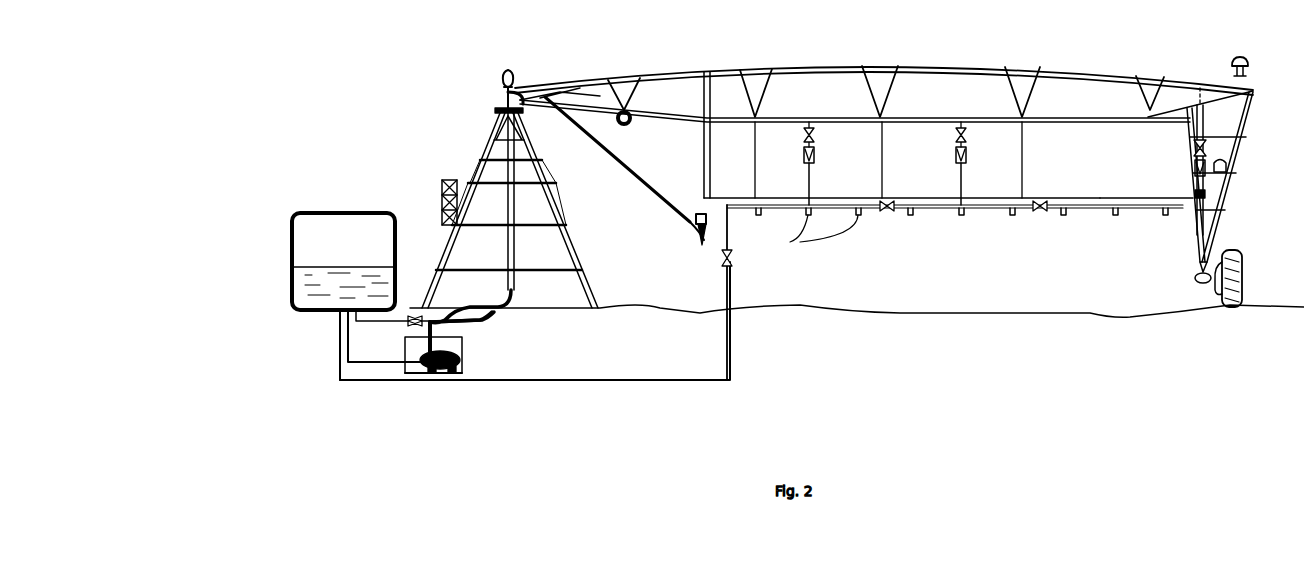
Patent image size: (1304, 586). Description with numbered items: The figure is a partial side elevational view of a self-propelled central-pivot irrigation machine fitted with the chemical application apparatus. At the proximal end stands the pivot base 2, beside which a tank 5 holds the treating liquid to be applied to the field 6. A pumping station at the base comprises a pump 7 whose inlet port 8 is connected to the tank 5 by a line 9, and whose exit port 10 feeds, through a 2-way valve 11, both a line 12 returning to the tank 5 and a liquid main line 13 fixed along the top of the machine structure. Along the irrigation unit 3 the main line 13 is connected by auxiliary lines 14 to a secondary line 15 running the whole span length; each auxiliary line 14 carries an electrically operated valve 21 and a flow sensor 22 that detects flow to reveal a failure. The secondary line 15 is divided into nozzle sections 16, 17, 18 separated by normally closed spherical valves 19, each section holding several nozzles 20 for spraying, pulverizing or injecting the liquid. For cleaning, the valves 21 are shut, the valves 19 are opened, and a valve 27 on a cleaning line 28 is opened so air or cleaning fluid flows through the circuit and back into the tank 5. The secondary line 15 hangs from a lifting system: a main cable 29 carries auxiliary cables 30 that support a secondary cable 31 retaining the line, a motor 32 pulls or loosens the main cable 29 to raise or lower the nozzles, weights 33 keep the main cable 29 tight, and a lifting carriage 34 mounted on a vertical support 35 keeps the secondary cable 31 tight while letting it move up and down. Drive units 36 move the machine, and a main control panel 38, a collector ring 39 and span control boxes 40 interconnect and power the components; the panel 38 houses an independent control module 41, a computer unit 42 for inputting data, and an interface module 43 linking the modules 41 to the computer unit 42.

The pivot base 2 is at (553, 190).
The irrigation unit 3 is at (940, 66).
The tank 5 is at (291, 246).
The field 6 is at (640, 304).
The pump 7 is at (428, 376).
The inlet port 8 is at (410, 358).
The line 9 is at (385, 366).
The exit port 10 is at (462, 350).
The 2-way valve 11 is at (408, 326).
The line 12 is at (343, 318).
The liquid main line 13 is at (521, 308).
The auxiliary line 14 is at (812, 198).
The secondary line 15 is at (934, 214).
The nozzle section 16 is at (815, 258).
The nozzle section 17 is at (975, 243).
The nozzle section 18 is at (1120, 233).
The spherical valve 19 is at (893, 214).
The nozzle 20 is at (817, 239).
The electrically operated valve 21 is at (815, 134).
The flow sensor 22 is at (815, 158).
The valve 27 is at (733, 266).
The cleaning line 28 is at (735, 384).
The main cable 29 is at (640, 117).
The auxiliary cable 30 is at (753, 172).
The secondary cable 31 is at (1097, 197).
The motor 32 is at (629, 124).
The weight 33 is at (694, 226).
The lifting carriage 34 is at (1193, 189).
The vertical support 35 is at (1190, 125).
The drive unit 36 is at (1201, 284).
The main control panel 38 is at (440, 180).
The collector ring 39 is at (500, 75).
The span control box 40 is at (1249, 63).
The independent control module 41 is at (457, 186).
The computer unit 42 is at (441, 217).
The interface module 43 is at (441, 192).